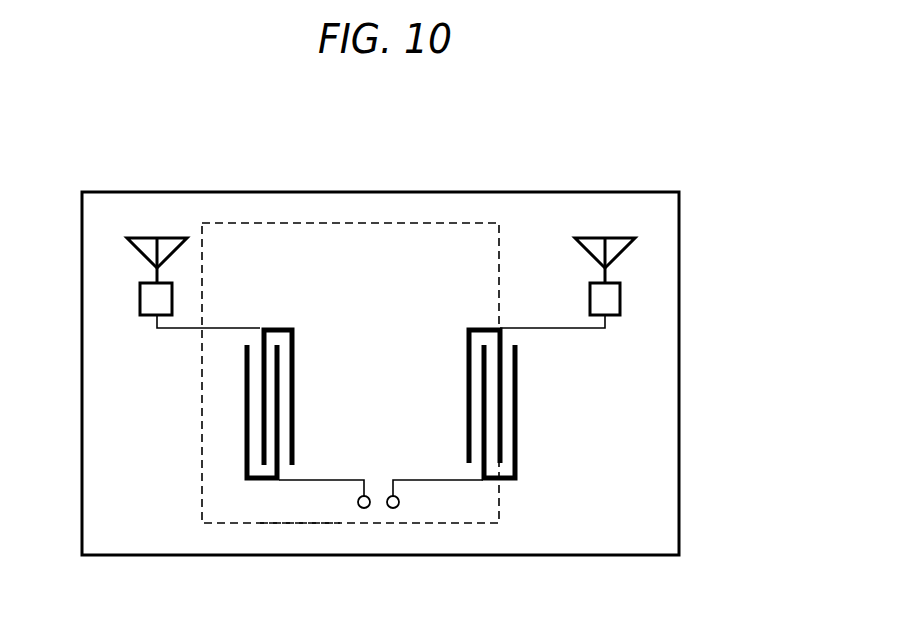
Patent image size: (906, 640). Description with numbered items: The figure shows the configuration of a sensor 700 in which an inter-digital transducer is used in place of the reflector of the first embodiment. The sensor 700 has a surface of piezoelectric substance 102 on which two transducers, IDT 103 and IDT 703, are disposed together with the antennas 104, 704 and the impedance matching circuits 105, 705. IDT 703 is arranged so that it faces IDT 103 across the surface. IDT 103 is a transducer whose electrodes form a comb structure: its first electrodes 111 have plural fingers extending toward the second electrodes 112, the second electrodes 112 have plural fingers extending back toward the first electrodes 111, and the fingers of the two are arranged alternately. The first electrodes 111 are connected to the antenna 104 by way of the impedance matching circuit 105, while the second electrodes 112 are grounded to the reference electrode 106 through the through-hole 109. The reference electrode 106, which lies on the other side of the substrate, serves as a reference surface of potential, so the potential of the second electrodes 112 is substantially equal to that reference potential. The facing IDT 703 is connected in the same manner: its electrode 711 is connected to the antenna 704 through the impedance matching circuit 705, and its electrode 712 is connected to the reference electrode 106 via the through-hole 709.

The sensor 700 is at (716, 215).
The piezoelectric substance 102 is at (427, 192).
The IDT 103 is at (287, 424).
The antenna 104 is at (175, 238).
The impedance matching circuit 105 is at (140, 297).
The reference electrode 106 is at (296, 524).
The through-hole 109 is at (364, 509).
The first electrodes 111 is at (281, 326).
The second electrodes 112 is at (256, 481).
The IDT 703 is at (475, 425).
The antenna 704 is at (582, 238).
The impedance matching circuit 705 is at (620, 297).
The through-hole 709 is at (393, 509).
The electrode 711 is at (472, 326).
The electrode 712 is at (505, 481).